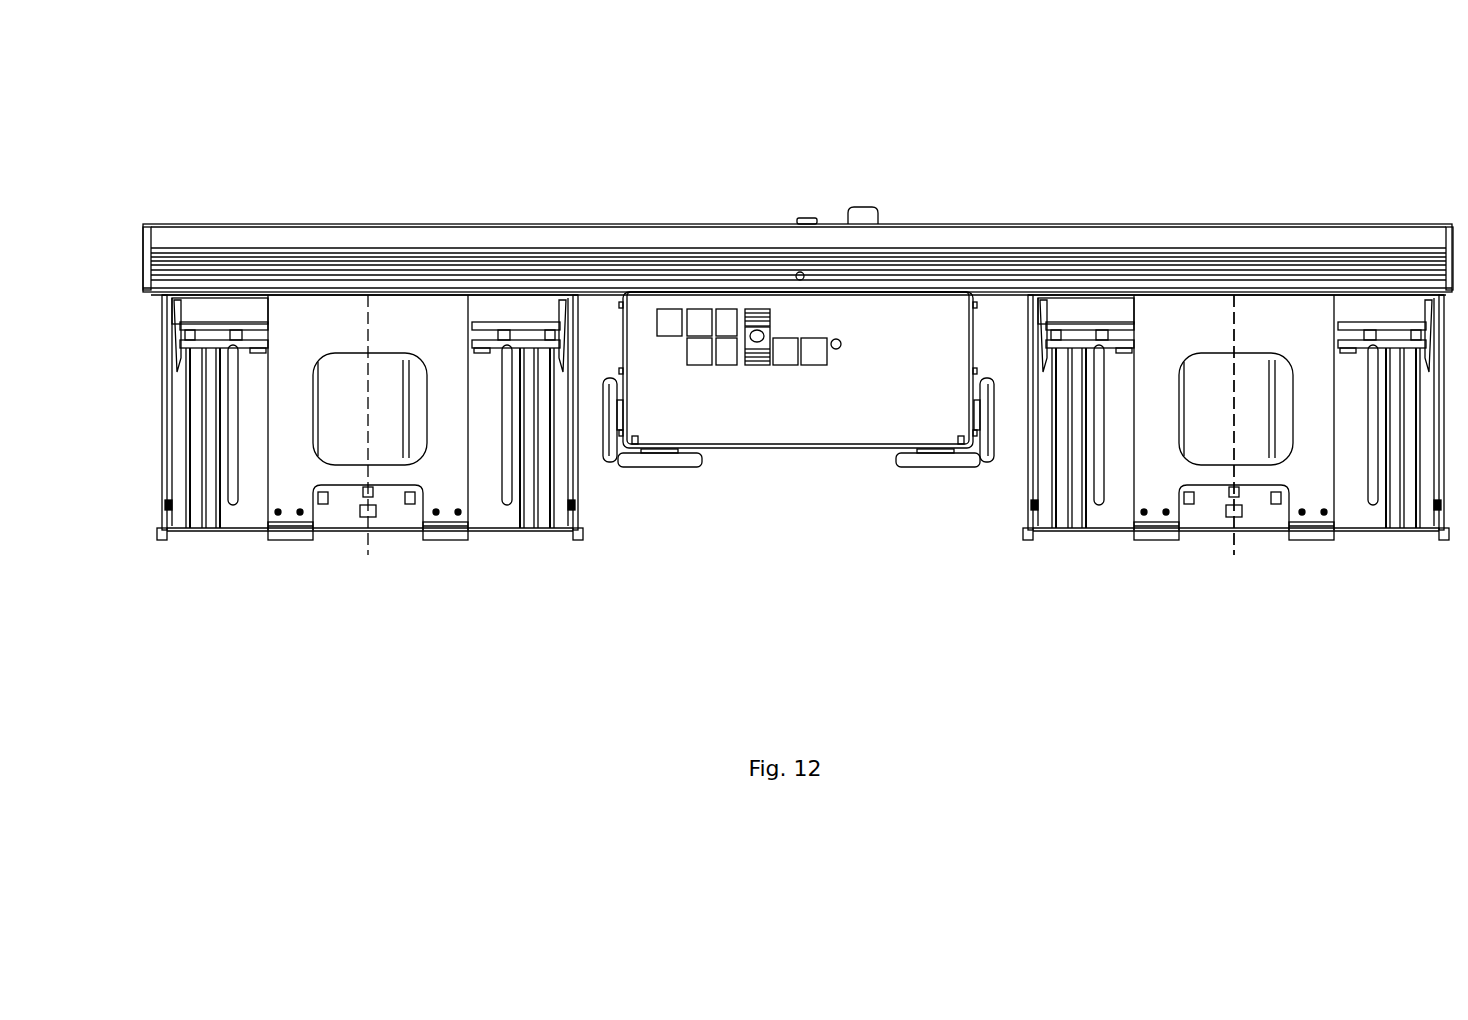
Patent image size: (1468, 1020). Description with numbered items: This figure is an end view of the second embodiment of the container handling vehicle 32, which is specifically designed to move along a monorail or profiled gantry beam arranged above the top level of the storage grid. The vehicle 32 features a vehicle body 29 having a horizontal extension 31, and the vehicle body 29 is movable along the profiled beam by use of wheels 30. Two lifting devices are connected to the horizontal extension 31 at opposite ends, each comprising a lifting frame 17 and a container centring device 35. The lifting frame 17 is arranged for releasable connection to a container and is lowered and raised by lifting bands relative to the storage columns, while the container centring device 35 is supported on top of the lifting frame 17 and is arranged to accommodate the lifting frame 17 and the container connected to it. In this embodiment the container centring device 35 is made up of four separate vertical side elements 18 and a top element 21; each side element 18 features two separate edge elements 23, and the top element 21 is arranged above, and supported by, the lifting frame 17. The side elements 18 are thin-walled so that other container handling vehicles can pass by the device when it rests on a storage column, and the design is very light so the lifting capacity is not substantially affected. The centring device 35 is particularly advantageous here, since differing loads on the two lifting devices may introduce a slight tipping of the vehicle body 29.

The lifting frame 17 is at (230, 308).
The vertical side elements 18 is at (447, 448).
The top element 21 is at (1237, 295).
The edge elements 23 is at (290, 530).
The vehicle body 29 is at (803, 415).
The wheels 30 is at (608, 423).
The horizontal extension 31 is at (432, 240).
The container handling vehicle 32 is at (730, 207).
The container centring device 35 is at (275, 410).